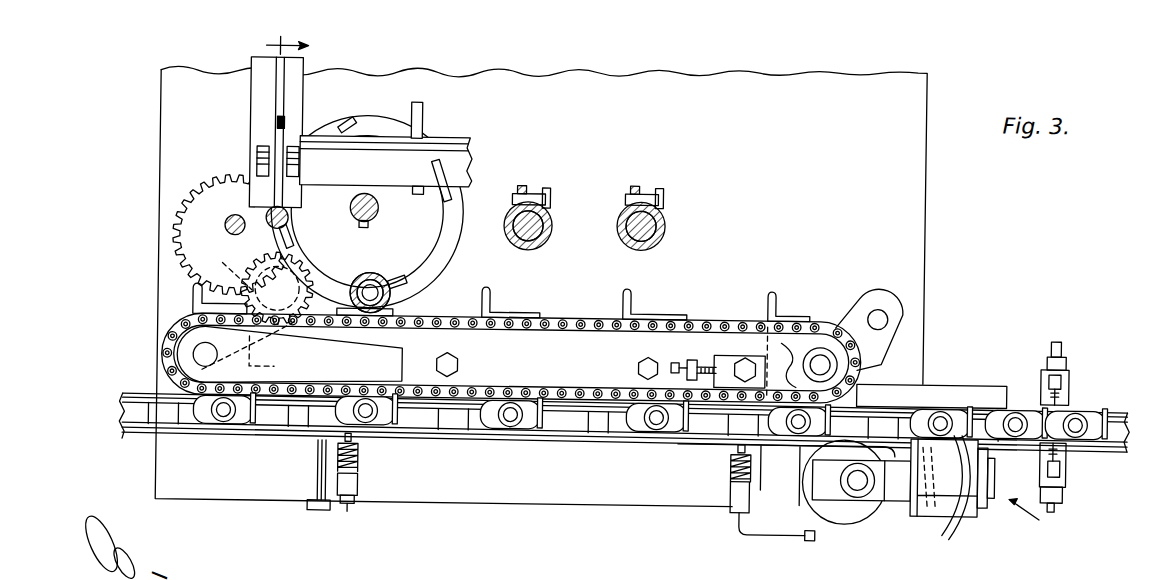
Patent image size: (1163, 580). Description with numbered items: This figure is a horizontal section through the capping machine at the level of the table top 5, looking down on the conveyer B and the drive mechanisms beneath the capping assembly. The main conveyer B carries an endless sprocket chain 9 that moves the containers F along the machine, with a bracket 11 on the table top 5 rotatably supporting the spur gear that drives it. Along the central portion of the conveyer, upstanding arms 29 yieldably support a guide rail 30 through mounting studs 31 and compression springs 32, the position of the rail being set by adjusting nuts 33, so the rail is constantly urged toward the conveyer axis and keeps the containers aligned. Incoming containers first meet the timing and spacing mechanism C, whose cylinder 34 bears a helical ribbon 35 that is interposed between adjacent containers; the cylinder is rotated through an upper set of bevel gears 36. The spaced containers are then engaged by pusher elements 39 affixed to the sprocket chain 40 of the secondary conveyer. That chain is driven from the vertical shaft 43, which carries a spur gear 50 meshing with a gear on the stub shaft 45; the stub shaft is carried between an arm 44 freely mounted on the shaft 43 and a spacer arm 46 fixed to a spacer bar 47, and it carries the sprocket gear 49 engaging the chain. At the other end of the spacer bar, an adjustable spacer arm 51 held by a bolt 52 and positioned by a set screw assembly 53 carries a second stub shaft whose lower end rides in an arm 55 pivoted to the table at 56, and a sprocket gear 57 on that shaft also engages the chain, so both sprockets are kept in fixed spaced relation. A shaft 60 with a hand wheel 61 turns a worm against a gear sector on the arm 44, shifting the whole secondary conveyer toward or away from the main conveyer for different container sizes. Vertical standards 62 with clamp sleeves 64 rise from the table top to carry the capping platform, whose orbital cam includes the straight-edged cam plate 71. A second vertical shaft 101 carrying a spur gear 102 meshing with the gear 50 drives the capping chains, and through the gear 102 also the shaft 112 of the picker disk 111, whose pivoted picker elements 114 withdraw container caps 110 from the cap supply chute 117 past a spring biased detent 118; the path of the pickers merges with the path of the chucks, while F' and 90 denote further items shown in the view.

The table top 5 is at (922, 194).
The sprocket chain 9 is at (884, 402).
The bracket 11 is at (447, 272).
The upstanding arms 29 is at (360, 483).
The guide rail 30 is at (544, 436).
The mounting studs 31 is at (350, 512).
The compression springs 32 is at (362, 455).
The position-adjusting nuts 33 is at (362, 490).
The cylinder 34 is at (998, 510).
The helical ribbon 35 is at (953, 497).
The upper set of bevel gears 36 is at (888, 497).
The pusher elements 39 is at (511, 297).
The sprocket chain 40 is at (601, 310).
The shaft 43 is at (224, 264).
The arm 44 is at (270, 280).
The stub shaft 45 is at (196, 351).
The spacer arm 46 is at (181, 362).
The spacer bar 47 is at (449, 351).
The sprocket gear 49 is at (268, 357).
The spur gear 50 is at (220, 296).
The spacer arm 51 is at (771, 345).
The bolt 52 is at (746, 352).
The set screw assembly 53 is at (640, 373).
The arm 55 is at (856, 298).
The pivot 56 is at (881, 304).
The sprocket gear 57 is at (812, 344).
The shaft 60 is at (318, 458).
The hand wheel 61 is at (314, 511).
The vertical standards 62 is at (621, 216).
The clamp sleeves 64 is at (617, 248).
The cam plate 71 is at (269, 45).
The base 90 is at (548, 570).
The shaft 101 is at (224, 226).
The spur gear 102 is at (232, 172).
The container cap 110 is at (289, 219).
The picker disk 111 is at (398, 120).
The shaft 112 is at (378, 212).
The picker elements 114 is at (346, 121).
The cap supply chute 117 is at (262, 83).
The spring biased detent 118 is at (268, 186).
The conveyer B is at (1093, 390).
The timing and spacing mechanism C is at (1031, 520).
The containers F is at (512, 434).
The carrier F' is at (1009, 399).